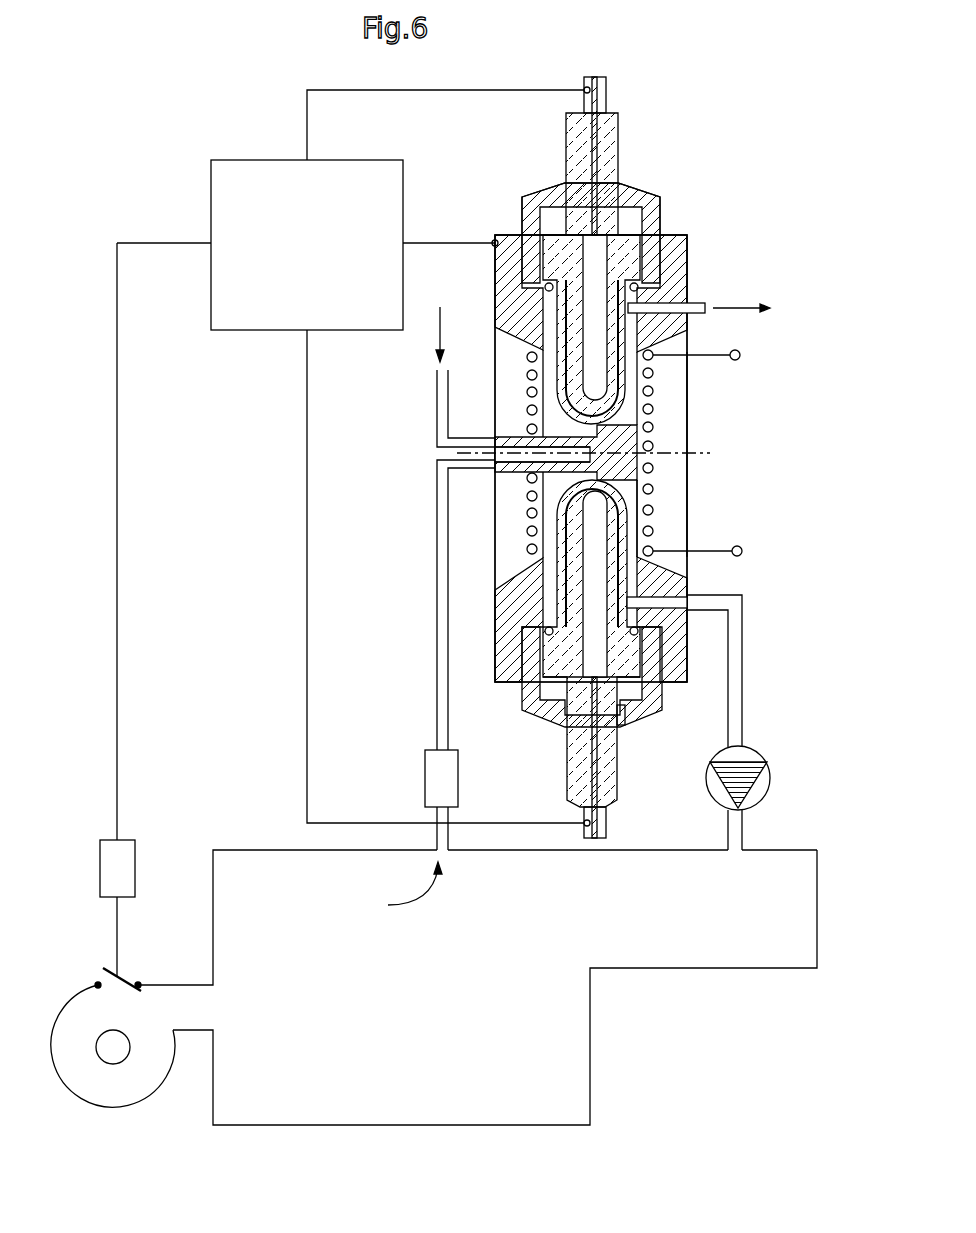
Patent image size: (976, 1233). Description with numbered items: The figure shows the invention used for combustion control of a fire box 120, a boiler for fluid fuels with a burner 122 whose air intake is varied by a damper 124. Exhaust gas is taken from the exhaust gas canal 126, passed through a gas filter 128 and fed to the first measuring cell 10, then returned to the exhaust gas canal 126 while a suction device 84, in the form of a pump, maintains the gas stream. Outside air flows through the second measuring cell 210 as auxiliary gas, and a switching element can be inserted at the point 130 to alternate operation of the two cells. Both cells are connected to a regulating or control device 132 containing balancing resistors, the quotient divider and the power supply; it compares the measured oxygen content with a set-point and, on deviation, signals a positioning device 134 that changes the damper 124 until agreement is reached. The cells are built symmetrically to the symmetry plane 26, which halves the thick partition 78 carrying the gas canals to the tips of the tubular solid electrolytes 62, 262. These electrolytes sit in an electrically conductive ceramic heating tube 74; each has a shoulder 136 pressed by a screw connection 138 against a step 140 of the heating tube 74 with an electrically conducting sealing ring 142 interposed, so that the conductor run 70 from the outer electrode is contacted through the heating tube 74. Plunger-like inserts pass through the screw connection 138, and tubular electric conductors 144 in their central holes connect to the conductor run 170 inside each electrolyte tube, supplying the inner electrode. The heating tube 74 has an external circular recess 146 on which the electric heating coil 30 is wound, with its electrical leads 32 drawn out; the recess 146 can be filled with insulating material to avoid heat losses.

The first measuring cell 10 is at (705, 579).
The symmetry plane 26 is at (473, 450).
The electric heating coil 30 is at (653, 531).
The electrical leads 32 is at (740, 360).
The tubular solid electrolyte 62 is at (570, 520).
The conductor run 70 is at (565, 357).
The heating tube 74 is at (695, 409).
The partition 78 is at (633, 478).
The suction device 84 is at (715, 778).
The fire box 120 is at (354, 1043).
The burner 122 is at (110, 1115).
The damper 124 is at (122, 975).
The exhaust gas canal 126 is at (528, 917).
The gas filter 128 is at (437, 772).
The point 130 is at (443, 452).
The regulating or control device 132 is at (320, 253).
The positioning device 134 is at (123, 850).
The shoulder 136 is at (626, 247).
The screw connection 138 is at (632, 185).
The step 140 is at (650, 300).
The sealing ring 142 is at (610, 118).
The tubular electric conductor 144 is at (586, 78).
The external circular recess 146 is at (672, 466).
The conductor run 170 is at (580, 310).
The second measuring cell 210 is at (505, 210).
The tubular solid electrolyte 262 is at (620, 325).